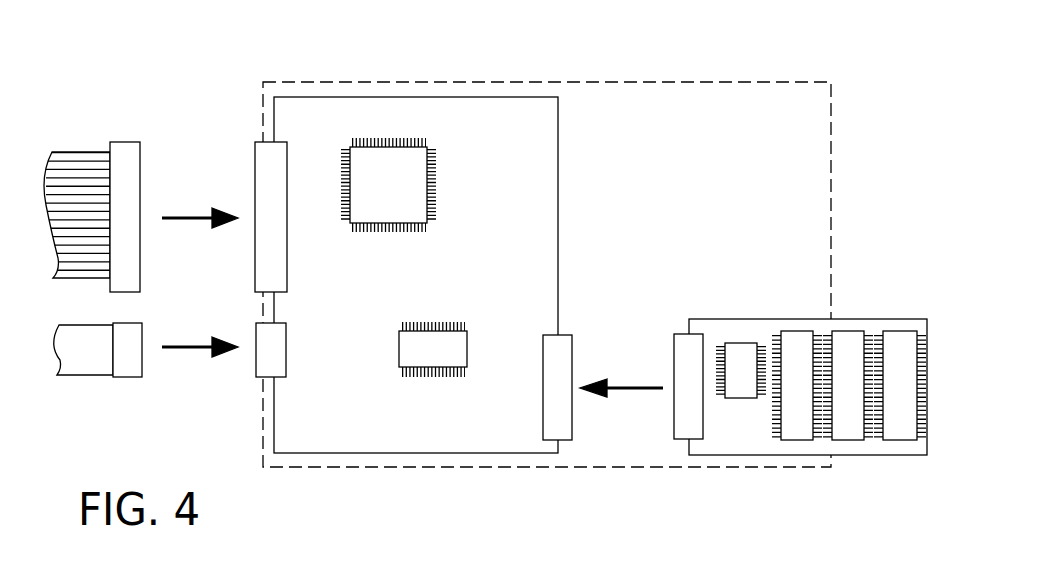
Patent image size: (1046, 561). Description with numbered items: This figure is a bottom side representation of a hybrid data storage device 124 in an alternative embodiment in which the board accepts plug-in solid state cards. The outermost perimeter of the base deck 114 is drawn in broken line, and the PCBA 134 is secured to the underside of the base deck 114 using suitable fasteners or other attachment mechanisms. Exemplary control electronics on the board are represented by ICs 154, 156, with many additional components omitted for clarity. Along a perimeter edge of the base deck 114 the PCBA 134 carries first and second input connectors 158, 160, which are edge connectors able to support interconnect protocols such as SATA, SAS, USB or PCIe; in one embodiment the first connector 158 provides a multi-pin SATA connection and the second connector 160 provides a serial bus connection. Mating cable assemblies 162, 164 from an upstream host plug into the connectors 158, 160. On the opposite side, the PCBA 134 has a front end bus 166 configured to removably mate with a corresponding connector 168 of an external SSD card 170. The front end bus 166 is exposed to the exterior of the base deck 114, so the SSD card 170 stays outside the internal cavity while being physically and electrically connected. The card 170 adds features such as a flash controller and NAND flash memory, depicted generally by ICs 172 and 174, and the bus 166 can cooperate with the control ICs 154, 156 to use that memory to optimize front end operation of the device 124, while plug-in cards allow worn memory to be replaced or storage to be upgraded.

The base deck 114 is at (703, 82).
The device 124 is at (123, 226).
The PCBA 134 is at (308, 100).
The IC 154 is at (395, 167).
The IC 156 is at (412, 347).
The first input connector 158 is at (255, 163).
The second input connector 160 is at (255, 365).
The cable assembly 162 is at (140, 167).
The cable assembly 164 is at (143, 362).
The front end bus 166 is at (573, 352).
The connector 168 is at (673, 357).
The SSD card 170 is at (748, 440).
The IC 172 is at (740, 357).
The IC 174 is at (867, 312).